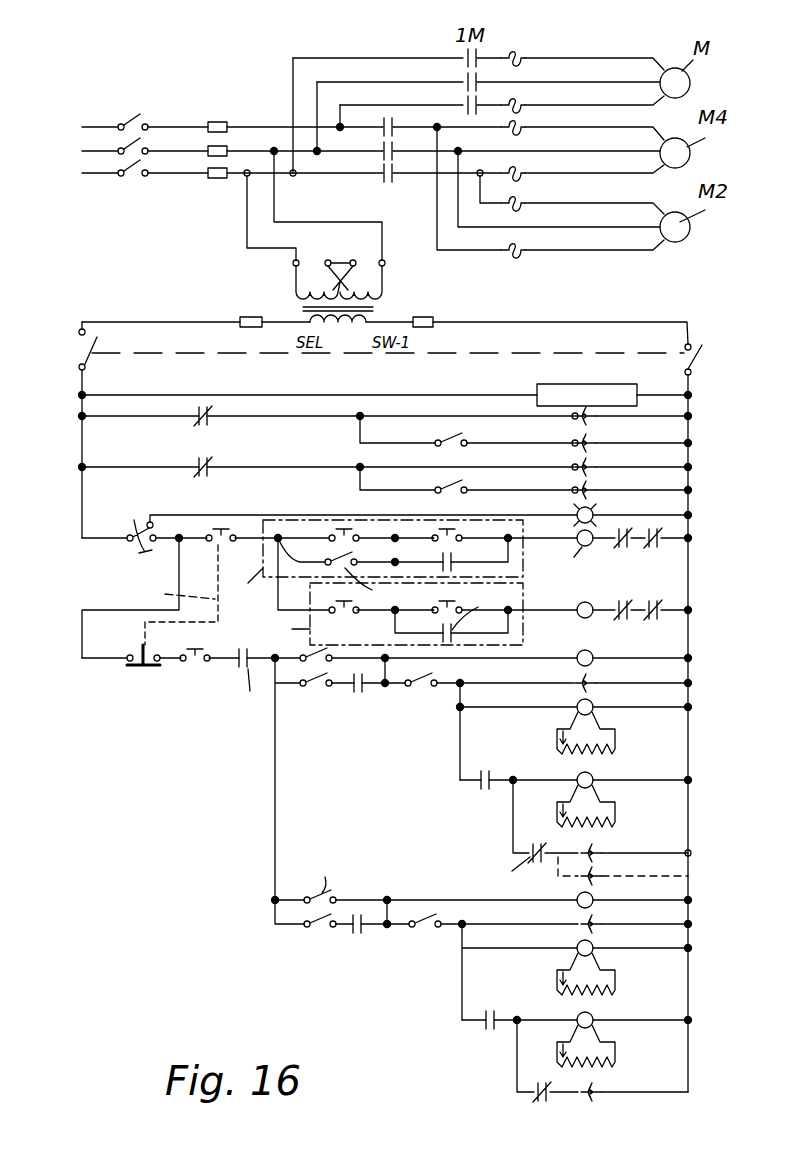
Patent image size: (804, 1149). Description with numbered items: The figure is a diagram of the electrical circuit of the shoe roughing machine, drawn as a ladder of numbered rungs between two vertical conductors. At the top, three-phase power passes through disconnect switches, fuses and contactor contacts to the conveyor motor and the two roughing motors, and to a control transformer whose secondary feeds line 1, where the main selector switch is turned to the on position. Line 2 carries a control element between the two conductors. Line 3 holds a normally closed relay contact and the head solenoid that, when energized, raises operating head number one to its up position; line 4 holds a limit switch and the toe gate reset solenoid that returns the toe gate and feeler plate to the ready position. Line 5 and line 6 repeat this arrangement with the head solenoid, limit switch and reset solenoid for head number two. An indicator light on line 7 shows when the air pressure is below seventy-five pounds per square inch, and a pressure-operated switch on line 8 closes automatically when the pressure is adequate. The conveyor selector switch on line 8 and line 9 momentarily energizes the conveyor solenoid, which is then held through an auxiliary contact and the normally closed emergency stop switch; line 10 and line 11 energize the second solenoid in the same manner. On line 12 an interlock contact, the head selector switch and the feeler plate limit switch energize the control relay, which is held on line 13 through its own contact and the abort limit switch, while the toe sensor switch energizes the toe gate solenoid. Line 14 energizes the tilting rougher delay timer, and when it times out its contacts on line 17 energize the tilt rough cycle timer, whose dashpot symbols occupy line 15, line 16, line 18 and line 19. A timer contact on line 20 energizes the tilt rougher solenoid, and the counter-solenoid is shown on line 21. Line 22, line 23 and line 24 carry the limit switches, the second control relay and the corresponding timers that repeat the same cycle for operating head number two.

The line 1 is at (375, 699).
The line 2 is at (368, 395).
The line 3 is at (368, 420).
The line 4 is at (368, 435).
The line 5 is at (368, 462).
The line 6 is at (368, 484).
The line 7 is at (368, 509).
The line 8 is at (368, 550).
The line 9 is at (284, 565).
The line 10 is at (367, 599).
The line 11 is at (275, 627).
The line 12 is at (367, 669).
The line 13 is at (367, 780).
The line 14 is at (367, 733).
The line 15 is at (53, 728).
The line 16 is at (53, 753).
The line 17 is at (367, 782).
The line 18 is at (53, 802).
The line 19 is at (53, 830).
The line 20 is at (700, 785).
The line 21 is at (365, 874).
The line 22 is at (367, 890).
The line 23 is at (367, 929).
The line 24 is at (367, 973).